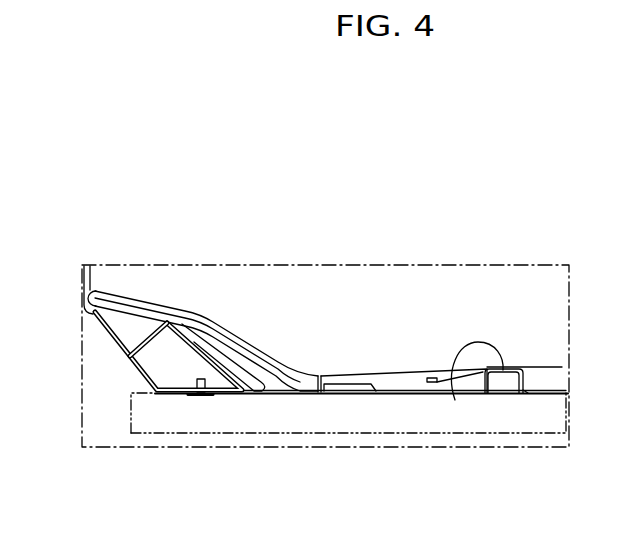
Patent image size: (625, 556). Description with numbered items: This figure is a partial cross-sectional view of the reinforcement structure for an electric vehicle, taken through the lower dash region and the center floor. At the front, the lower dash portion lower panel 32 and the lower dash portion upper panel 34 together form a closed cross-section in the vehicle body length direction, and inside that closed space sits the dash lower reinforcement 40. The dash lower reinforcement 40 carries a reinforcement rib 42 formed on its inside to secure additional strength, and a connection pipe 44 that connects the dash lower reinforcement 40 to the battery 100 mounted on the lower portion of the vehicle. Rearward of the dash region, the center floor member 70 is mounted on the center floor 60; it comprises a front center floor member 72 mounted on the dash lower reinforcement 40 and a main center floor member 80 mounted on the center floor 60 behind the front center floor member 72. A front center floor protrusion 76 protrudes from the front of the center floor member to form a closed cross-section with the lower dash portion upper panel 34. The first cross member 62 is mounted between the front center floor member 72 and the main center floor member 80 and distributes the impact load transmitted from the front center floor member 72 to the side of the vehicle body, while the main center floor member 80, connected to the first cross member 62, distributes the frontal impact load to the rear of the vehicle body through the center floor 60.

The lower dash portion lower panel 32 is at (93, 316).
The lower dash portion upper panel 34 is at (250, 394).
The dash lower reinforcement 40 is at (117, 352).
The reinforcement rib 42 is at (150, 336).
The connection pipe 44 is at (233, 349).
The center floor 60 is at (552, 393).
The first cross member 62 is at (455, 400).
The center floor member 70 is at (552, 213).
The front center floor member 72 is at (340, 364).
The front center floor protrusion 76 is at (217, 325).
The main center floor member 80 is at (542, 365).
The battery 100 is at (168, 434).